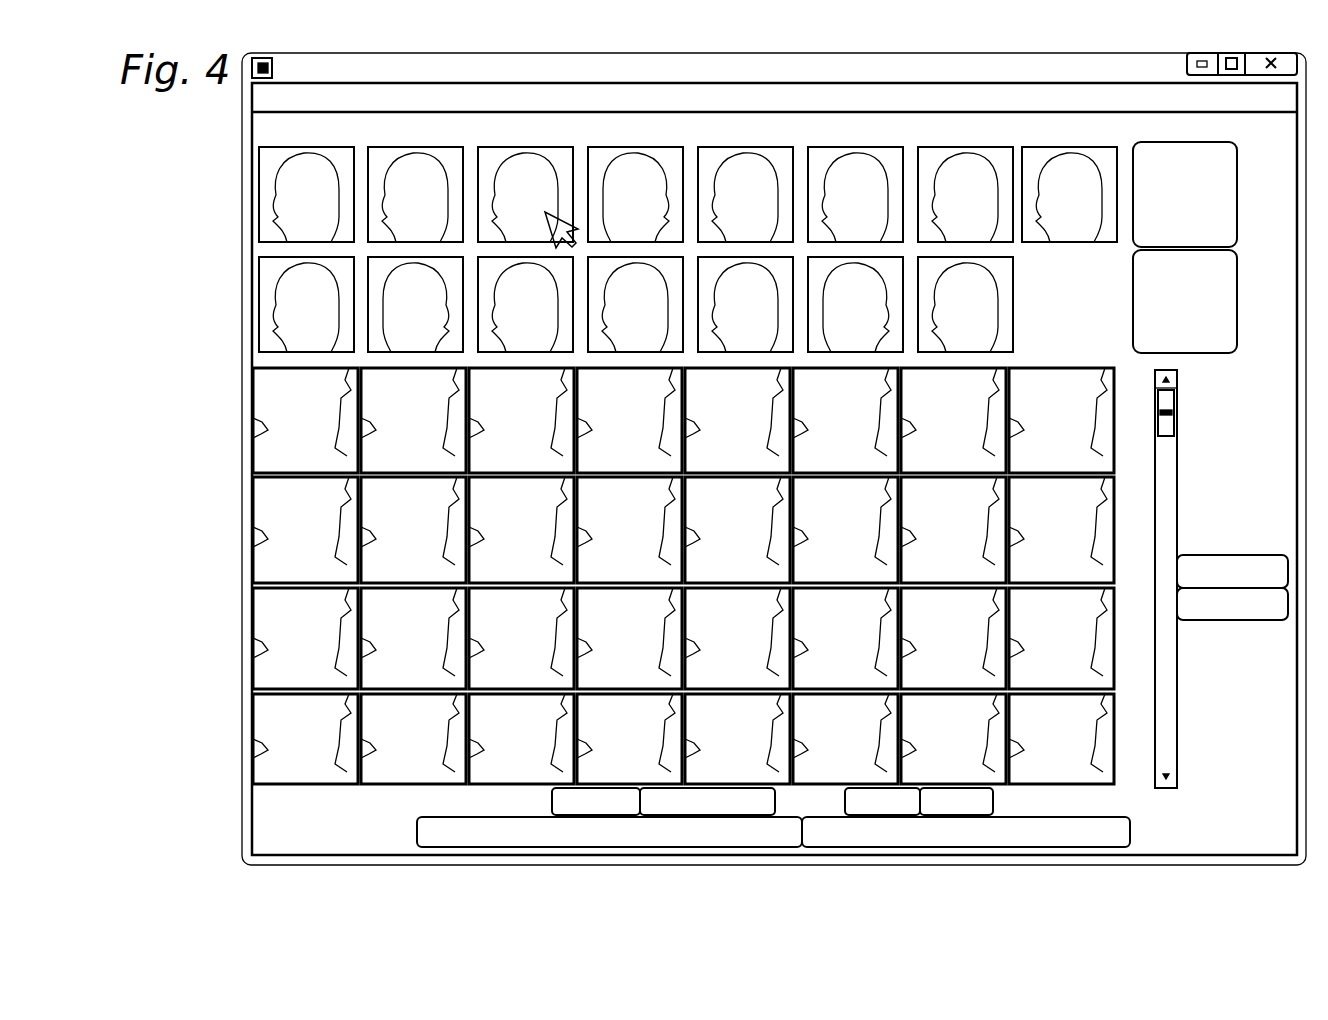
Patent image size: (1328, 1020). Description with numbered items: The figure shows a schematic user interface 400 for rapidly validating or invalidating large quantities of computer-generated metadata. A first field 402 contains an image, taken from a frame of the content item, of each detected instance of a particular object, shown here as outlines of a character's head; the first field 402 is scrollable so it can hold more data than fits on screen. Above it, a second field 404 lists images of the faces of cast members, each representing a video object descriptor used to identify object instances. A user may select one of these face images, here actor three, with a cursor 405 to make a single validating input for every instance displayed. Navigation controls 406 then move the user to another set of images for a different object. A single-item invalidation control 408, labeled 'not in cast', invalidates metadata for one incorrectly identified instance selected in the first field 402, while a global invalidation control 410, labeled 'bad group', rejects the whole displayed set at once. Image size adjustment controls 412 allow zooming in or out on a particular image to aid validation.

The user interface 400 is at (152, 168).
The first field 402 is at (250, 368).
The second field 404 is at (257, 146).
The cursor 405 is at (566, 212).
The navigation controls 406 is at (373, 815).
The single-item invalidation control 408 is at (1238, 197).
The global invalidation control 410 is at (1238, 300).
The image size adjustment controls 412 is at (1228, 554).